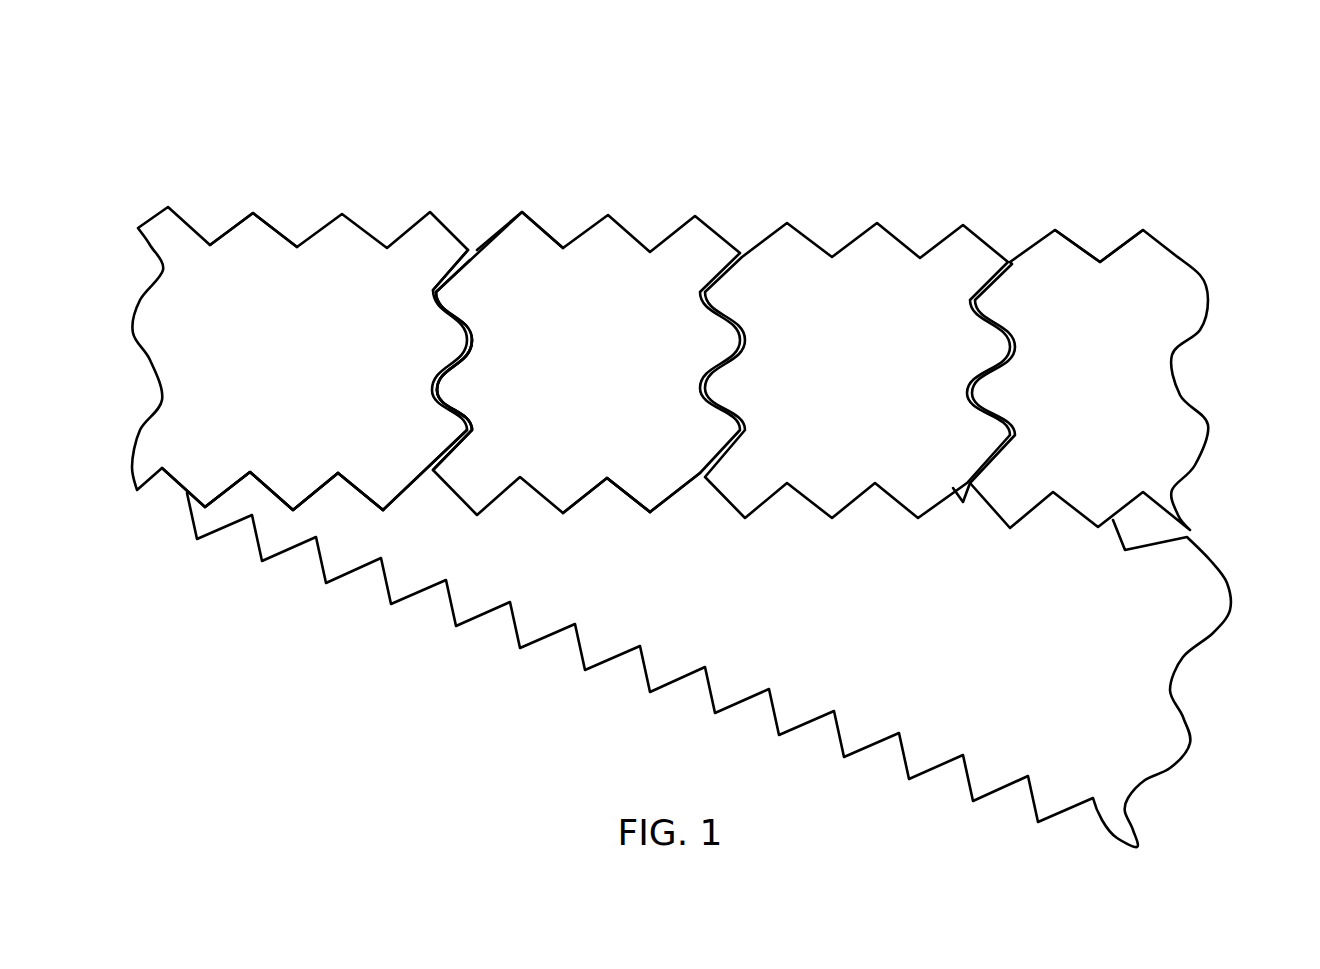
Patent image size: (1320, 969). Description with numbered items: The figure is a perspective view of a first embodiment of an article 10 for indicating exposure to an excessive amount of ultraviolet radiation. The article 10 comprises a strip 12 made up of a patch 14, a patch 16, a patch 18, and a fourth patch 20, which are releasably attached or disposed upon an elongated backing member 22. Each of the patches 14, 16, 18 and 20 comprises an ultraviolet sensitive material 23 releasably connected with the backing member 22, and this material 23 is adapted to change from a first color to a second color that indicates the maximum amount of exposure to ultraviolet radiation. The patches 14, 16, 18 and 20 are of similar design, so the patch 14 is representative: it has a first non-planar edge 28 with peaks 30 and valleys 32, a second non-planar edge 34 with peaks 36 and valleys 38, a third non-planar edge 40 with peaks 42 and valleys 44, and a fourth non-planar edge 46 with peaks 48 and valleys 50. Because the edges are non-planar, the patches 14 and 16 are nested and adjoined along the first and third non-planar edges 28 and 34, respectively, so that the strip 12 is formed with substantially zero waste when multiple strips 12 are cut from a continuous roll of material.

The article 10 is at (961, 94).
The strip 12 is at (1258, 335).
The patch 14 is at (147, 372).
The patch 16 is at (558, 516).
The patch 18 is at (831, 520).
The fourth patch 20 is at (1190, 333).
The elongated backing member 22 is at (680, 640).
The ultraviolet sensitive material 23 is at (263, 215).
The first non-planar edge 28 is at (418, 485).
The peaks 30 is at (467, 337).
The valleys 32 is at (436, 292).
The second non-planar edge 34 is at (362, 493).
The peaks 36 is at (203, 509).
The valleys 38 is at (250, 475).
The third non-planar edge 40 is at (440, 292).
The peaks 42 is at (440, 388).
The valleys 44 is at (468, 428).
The fourth non-planar edge 46 is at (633, 508).
The peaks 48 is at (527, 215).
The valleys 50 is at (615, 490).